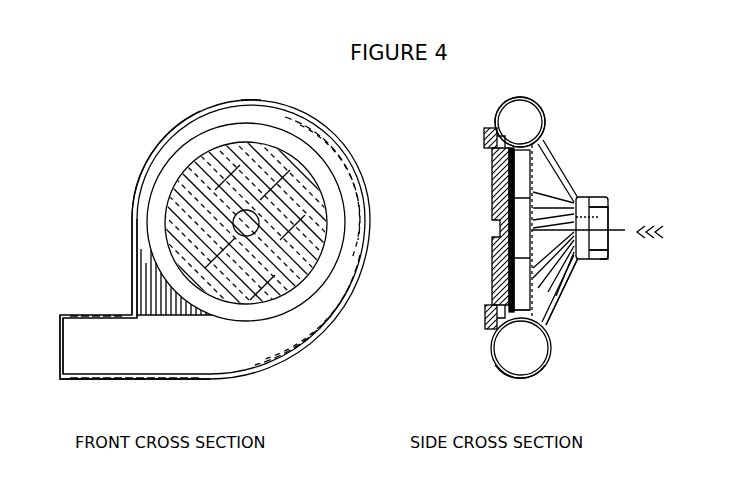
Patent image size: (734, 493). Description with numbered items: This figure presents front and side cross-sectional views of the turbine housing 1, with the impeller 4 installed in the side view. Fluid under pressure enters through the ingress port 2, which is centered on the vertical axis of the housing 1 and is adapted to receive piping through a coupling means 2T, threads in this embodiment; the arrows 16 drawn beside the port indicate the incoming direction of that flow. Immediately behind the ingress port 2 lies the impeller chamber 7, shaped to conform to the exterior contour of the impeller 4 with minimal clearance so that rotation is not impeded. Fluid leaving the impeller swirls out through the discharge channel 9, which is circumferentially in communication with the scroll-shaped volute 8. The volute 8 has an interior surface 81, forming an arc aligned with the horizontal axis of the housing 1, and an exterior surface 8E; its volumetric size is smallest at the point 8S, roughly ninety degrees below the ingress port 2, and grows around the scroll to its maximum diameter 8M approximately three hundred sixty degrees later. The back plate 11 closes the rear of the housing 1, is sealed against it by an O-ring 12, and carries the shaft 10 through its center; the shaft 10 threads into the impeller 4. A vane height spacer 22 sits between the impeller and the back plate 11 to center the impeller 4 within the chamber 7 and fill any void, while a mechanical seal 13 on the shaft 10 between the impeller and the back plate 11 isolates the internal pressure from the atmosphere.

The turbine unit housing 1 is at (246, 98).
The fluid flow ingress port 2 is at (600, 217).
The coupling means 2T is at (608, 258).
The impeller 4 is at (578, 198).
The impeller chamber 7 is at (552, 200).
The fluid discharge volute 8 is at (307, 133).
The exterior surface of volute 8E is at (157, 152).
The maximum diameter of volute 8M is at (237, 347).
The minimum volumetric size of volute 8S is at (160, 306).
The interior surface of volute 81 is at (138, 181).
The discharge channel 9 is at (190, 152).
The impeller shaft 10 is at (295, 252).
The back plate 11 is at (492, 198).
The O-ring 12 is at (484, 156).
The mechanical seal 13 is at (492, 237).
The air flow direction 16 is at (667, 234).
The vane height spacer 22 is at (210, 240).